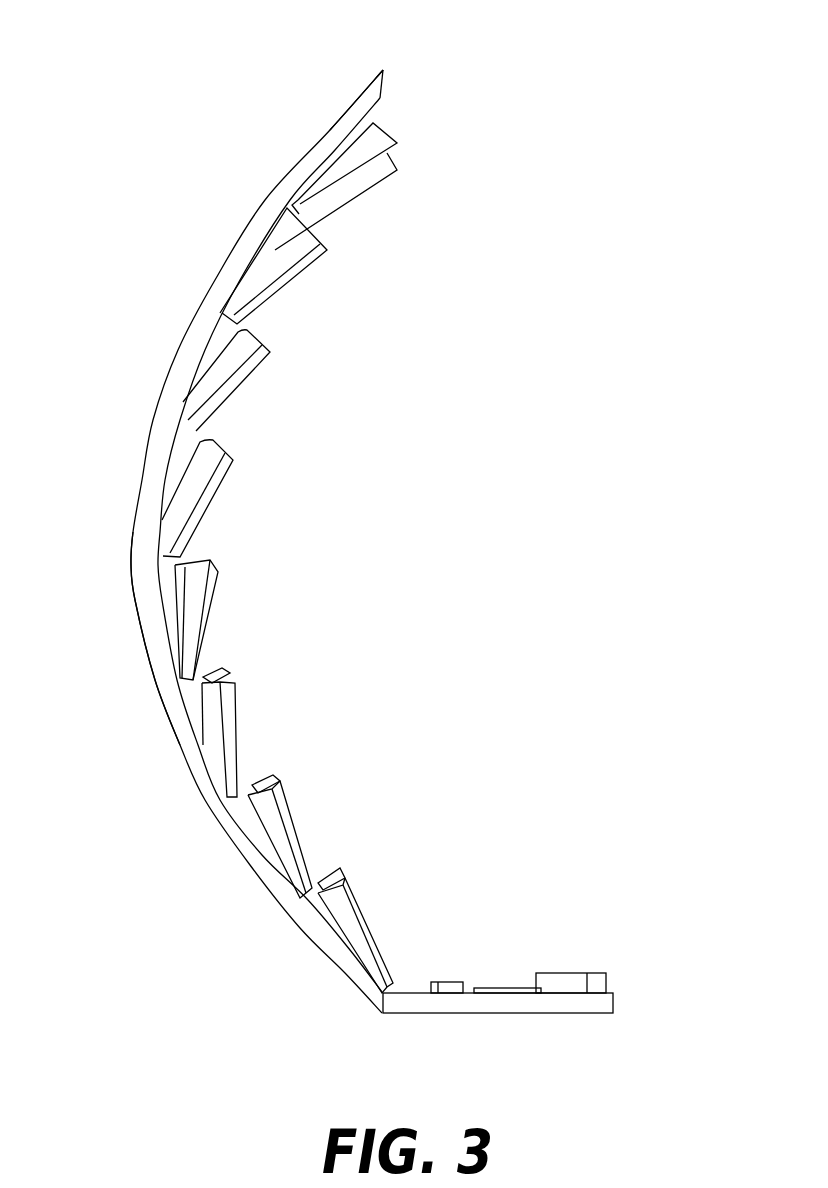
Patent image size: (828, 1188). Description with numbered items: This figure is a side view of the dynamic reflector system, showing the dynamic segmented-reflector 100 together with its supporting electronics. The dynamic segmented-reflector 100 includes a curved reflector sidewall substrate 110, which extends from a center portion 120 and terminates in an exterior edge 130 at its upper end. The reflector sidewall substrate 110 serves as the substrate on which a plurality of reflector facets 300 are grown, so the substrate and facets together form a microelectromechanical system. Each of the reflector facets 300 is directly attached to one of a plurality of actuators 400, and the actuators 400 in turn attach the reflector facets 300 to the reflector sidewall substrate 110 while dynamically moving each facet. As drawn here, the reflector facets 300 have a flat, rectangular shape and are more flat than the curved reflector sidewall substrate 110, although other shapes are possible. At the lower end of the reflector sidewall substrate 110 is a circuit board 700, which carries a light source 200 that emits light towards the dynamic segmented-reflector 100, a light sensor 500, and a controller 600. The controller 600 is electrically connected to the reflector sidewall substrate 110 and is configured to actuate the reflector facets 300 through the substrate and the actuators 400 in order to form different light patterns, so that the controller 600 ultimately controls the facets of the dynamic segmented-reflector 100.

The dynamic segmented-reflector 100 is at (578, 150).
The reflector sidewall substrate 110 is at (199, 307).
The center portion 120 is at (133, 532).
The exterior edge 130 is at (383, 70).
The light source 200 is at (446, 980).
The reflector facets 300 is at (287, 287).
The actuators 400 is at (187, 472).
The light sensor 500 is at (607, 978).
The controller 600 is at (514, 988).
The circuit board 700 is at (502, 1013).